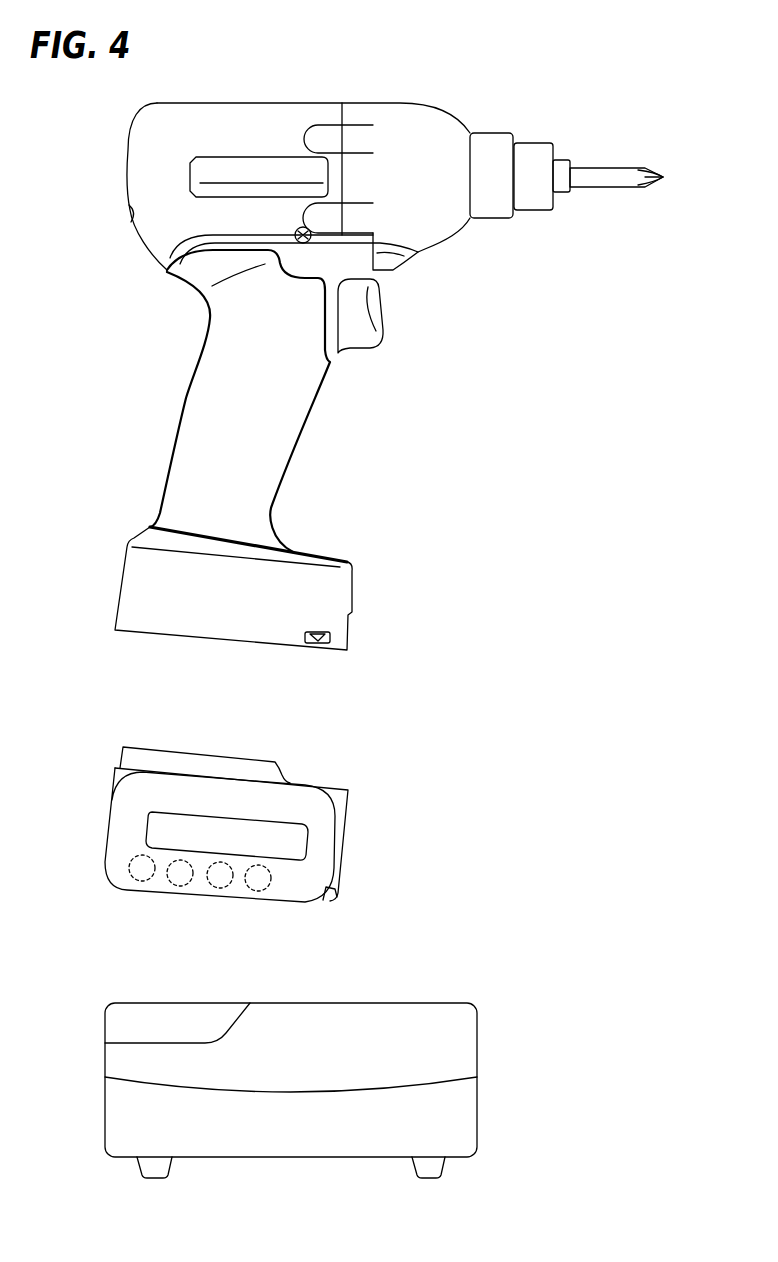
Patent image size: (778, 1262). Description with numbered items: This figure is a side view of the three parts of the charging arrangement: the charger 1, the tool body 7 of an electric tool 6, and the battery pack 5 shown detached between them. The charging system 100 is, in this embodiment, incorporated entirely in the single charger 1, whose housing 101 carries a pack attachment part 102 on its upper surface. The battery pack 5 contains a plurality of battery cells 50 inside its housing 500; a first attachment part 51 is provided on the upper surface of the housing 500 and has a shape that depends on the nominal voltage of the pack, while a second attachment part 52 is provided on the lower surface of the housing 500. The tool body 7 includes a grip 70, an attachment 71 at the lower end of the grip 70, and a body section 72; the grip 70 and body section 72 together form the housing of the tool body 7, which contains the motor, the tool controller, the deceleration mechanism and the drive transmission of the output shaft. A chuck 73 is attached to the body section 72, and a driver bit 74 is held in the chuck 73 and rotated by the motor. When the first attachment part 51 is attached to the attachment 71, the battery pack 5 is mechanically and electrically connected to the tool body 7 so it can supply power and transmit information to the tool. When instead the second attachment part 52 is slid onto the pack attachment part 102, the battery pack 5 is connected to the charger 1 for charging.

The charger 1 is at (398, 989).
The charging system 100 is at (423, 1018).
The housing 101 is at (467, 1120).
The pack attachment part 102 is at (242, 1013).
The battery pack 5 is at (103, 772).
The battery cells 50 is at (142, 881).
The first attachment part 51 is at (277, 763).
The second attachment part 52 is at (298, 903).
The housing 500 is at (347, 833).
The electric tool 6 is at (56, 595).
The tool body 7 is at (110, 603).
The grip 70 is at (283, 442).
The attachment 71 is at (270, 637).
The body section 72 is at (181, 118).
The chuck 73 is at (533, 153).
The driver bit 74 is at (608, 173).